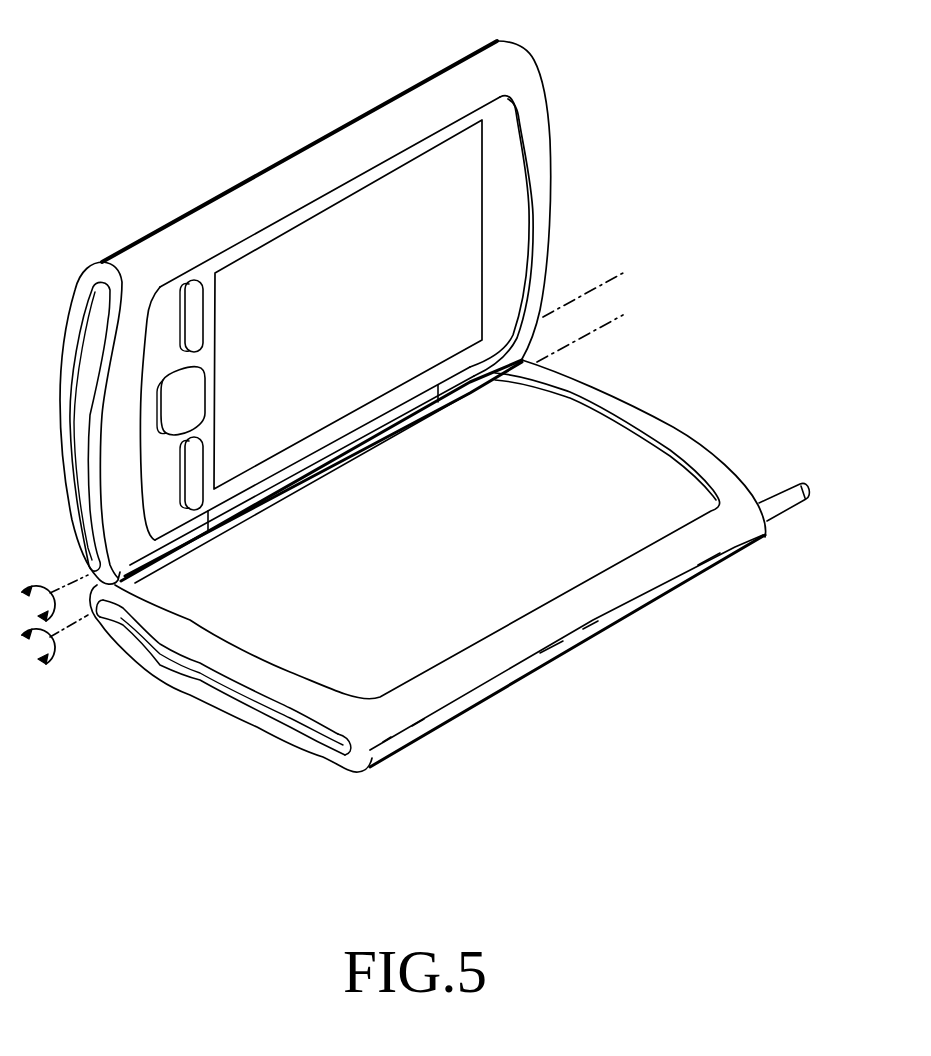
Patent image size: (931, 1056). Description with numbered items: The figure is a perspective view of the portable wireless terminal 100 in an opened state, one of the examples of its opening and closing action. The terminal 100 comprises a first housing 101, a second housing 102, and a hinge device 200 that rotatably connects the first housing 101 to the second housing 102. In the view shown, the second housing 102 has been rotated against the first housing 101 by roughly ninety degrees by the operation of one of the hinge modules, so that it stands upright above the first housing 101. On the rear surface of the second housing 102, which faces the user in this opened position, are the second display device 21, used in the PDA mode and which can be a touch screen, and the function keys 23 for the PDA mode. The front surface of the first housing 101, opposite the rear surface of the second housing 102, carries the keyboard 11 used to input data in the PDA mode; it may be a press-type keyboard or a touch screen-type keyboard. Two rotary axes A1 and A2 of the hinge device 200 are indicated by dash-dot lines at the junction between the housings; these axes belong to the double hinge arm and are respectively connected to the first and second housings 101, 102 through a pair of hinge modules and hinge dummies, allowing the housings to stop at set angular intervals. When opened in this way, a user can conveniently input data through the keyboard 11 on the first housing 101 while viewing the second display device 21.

The portable wireless terminal 100 is at (875, 178).
The first housing 101 is at (707, 433).
The second housing 102 is at (558, 145).
The keyboard 11 is at (560, 583).
The second display device 21 is at (397, 187).
The function keys 23 is at (187, 383).
The hinge device 200 is at (368, 427).
The rotary axis A1 is at (600, 281).
The rotary axis A2 is at (597, 325).